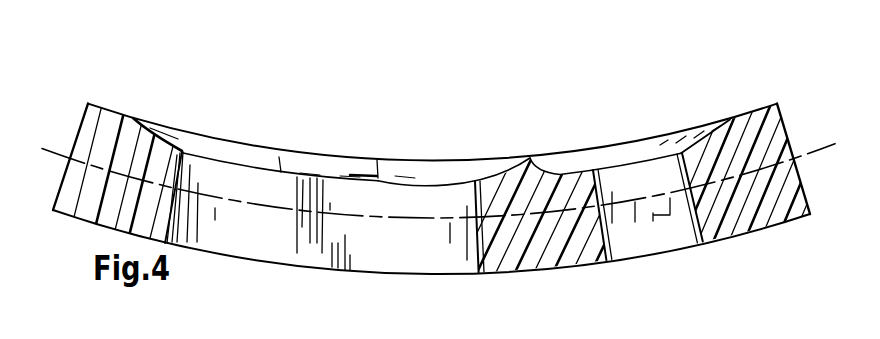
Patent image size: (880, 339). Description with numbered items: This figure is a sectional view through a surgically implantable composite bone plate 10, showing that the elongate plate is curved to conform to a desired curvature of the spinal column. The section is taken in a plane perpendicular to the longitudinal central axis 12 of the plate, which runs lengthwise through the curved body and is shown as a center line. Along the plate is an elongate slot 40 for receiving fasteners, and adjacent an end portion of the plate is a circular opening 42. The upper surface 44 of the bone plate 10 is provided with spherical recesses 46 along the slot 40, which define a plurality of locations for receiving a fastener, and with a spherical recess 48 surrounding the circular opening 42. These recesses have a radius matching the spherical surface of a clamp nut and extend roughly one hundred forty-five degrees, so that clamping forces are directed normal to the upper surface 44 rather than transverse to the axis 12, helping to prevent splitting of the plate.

The composite bone plate 10 is at (358, 133).
The longitudinal central axis 12 is at (802, 155).
The slot 40 is at (267, 237).
The circular opening 42 is at (655, 217).
The upper surface 44 is at (102, 103).
The spherical recesses 46 is at (343, 167).
The spherical recess 48 is at (565, 160).